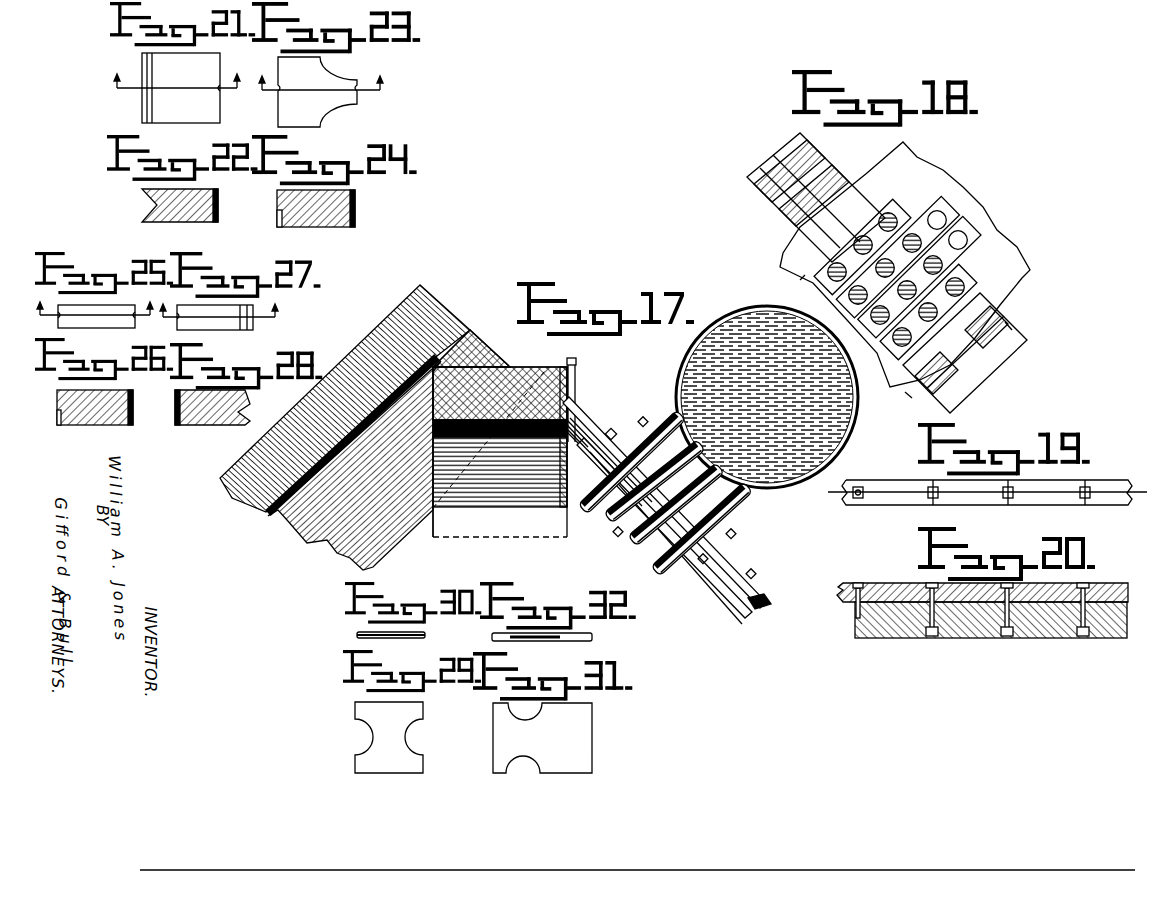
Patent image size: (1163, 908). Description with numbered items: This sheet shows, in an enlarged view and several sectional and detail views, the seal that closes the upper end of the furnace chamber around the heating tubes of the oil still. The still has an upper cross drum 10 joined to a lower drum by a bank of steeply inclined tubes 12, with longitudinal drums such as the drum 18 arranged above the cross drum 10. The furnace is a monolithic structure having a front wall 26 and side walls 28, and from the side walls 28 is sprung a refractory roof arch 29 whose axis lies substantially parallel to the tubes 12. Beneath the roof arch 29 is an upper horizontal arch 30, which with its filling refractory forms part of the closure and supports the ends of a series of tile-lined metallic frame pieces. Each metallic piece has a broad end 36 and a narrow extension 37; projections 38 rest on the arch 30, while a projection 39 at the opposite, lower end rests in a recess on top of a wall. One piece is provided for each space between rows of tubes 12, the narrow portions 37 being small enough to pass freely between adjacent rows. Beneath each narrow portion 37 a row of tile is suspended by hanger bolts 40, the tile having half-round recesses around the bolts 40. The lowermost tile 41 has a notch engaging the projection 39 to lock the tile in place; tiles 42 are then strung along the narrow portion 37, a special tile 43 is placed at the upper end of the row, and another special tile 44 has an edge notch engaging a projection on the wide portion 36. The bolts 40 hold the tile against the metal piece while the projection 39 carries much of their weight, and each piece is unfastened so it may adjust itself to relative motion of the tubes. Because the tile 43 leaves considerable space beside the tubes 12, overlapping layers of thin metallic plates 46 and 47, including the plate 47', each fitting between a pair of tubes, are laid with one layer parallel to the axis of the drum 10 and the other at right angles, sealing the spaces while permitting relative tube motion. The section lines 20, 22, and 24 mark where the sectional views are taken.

In FIG. 17, the upper cross drum 10 is at (752, 313).
In FIG. 17, the bank of steeply inclined tubes 12 is at (604, 519).
In FIG. 18, the bank of steeply inclined tubes 12 is at (1032, 275).
In FIG. 17, the longitudinal drum 18 is at (640, 447).
In FIG. 19, the strip 20 is at (1117, 521).
In FIG. 21, the section line 22- 22 is at (177, 72).
In FIG. 23, the section line 24- 24 is at (324, 74).
In FIG. 25, the front wall 26 is at (94, 318).
In FIG. 27, the side walls 28 is at (219, 302).
In FIG. 17, the roof arch 29 is at (398, 318).
In FIG. 17, the upper horizontal arch 30 is at (540, 367).
In FIG. 17, the broad end 36 is at (598, 413).
In FIG. 18, the broad end 36 is at (842, 187).
In FIG. 17, the narrow extension 37 is at (760, 557).
In FIG. 18, the narrow extension 37 is at (1012, 374).
In FIG. 19, the narrow extension 37 is at (898, 487).
In FIG. 20, the narrow extension 37 is at (1108, 586).
In FIG. 17, the projections 38 is at (576, 367).
In FIG. 18, the projections 38 is at (788, 153).
In FIG. 17, the projection 39 is at (762, 607).
In FIG. 19, the hanger bolts 40 is at (1090, 488).
In FIG. 20, the hanger bolts 40 is at (928, 588).
In FIG. 17, the lowermost tile 41 is at (732, 598).
In FIG. 27, the lowermost tile 41 is at (240, 320).
In FIG. 28, the lowermost tile 41 is at (194, 427).
In FIG. 17, the tiles 42 is at (616, 541).
In FIG. 20, the tiles 42 is at (963, 642).
In FIG. 25, the tiles 42 is at (90, 323).
In FIG. 26, the tiles 42 is at (88, 427).
In FIG. 17, the special tile 43 is at (612, 431).
In FIG. 23, the special tile 43 is at (325, 112).
In FIG. 24, the special tile 43 is at (345, 224).
In FIG. 17, the special tile 44 is at (592, 456).
In FIG. 21, the special tile 44 is at (207, 112).
In FIG. 22, the special tile 44 is at (210, 222).
In FIG. 18, the thin metallic plates 46 is at (985, 250).
In FIG. 30, the thin metallic plates 46 is at (426, 636).
In FIG. 29, the thin metallic plates 46 is at (424, 761).
In FIG. 17, the thin metallic plates 47 is at (713, 465).
In FIG. 18, the thin metallic plates 47 is at (914, 343).
In FIG. 32, the thin metallic plates 47 is at (565, 640).
In FIG. 31, the thin metallic plates 47 is at (570, 738).
In FIG. 17, the strip 47' is at (779, 575).